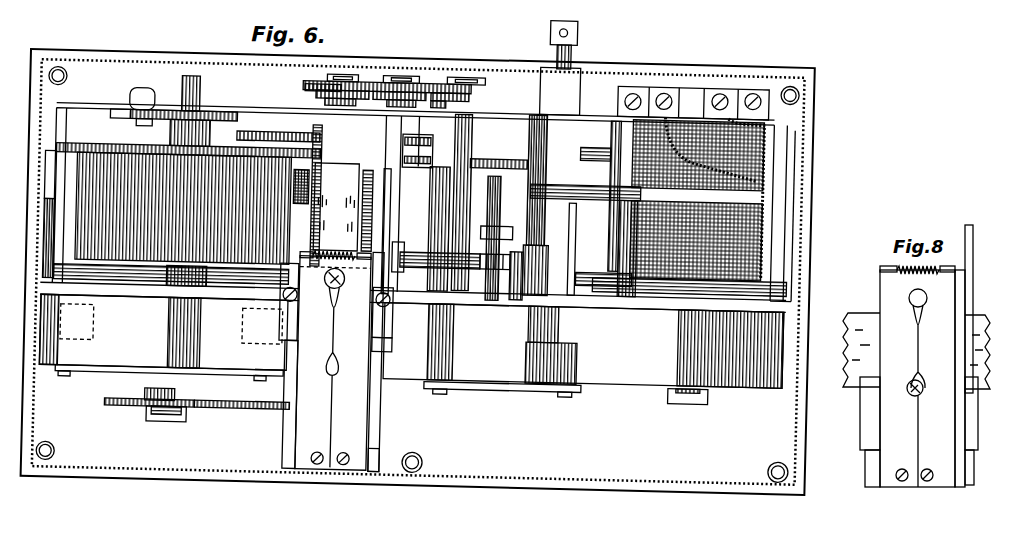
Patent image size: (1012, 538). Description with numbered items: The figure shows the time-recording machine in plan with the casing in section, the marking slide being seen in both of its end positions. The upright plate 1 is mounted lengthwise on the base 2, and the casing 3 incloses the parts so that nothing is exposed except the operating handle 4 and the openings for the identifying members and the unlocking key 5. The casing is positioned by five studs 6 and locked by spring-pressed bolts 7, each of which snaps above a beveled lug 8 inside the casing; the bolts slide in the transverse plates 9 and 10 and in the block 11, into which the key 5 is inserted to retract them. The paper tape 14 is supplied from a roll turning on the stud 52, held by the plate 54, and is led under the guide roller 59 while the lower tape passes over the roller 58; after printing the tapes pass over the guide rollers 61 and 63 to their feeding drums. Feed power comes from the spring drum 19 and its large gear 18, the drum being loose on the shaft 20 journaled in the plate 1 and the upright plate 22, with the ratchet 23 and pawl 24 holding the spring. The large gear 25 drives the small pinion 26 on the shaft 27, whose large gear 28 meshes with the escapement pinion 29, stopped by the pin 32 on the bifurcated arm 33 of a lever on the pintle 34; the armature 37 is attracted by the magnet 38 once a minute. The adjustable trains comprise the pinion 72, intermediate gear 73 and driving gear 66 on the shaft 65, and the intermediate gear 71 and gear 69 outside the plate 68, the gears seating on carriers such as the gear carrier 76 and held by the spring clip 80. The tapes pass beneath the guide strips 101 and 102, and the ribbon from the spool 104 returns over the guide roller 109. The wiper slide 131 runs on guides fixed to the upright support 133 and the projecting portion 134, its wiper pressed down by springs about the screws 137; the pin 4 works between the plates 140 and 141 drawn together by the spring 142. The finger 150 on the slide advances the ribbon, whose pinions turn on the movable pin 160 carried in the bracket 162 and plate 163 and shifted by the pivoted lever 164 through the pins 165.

In FIG. 6, the upright plate 1 is at (162, 287).
In FIG. 6, the base 2 is at (662, 455).
In FIG. 6, the casing 3 is at (185, 57).
In FIG. 6, the operating handle 4 is at (339, 277).
In FIG. 8, the operating handle 4 is at (910, 394).
In FIG. 6, the unlocking key 5 is at (576, 45).
In FIG. 6, the studs 6 is at (59, 66).
In FIG. 6, the spring-pressed bolts 7 is at (146, 262).
In FIG. 6, the beveled lug 8 is at (49, 222).
In FIG. 6, the transverse plate 9 is at (53, 178).
In FIG. 6, the transverse plate 10 is at (782, 187).
In FIG. 6, the block 11 is at (594, 220).
In FIG. 6, the paper tape 14 is at (649, 363).
In FIG. 8, the paper tape 14 is at (850, 377).
In FIG. 6, the large gear 18 is at (95, 151).
In FIG. 6, the spring drum 19 is at (150, 157).
In FIG. 6, the drum shaft 20 is at (201, 96).
In FIG. 6, the upright plate 22 is at (238, 105).
In FIG. 6, the ratchet 23 is at (173, 104).
In FIG. 6, the pawl 24 is at (120, 106).
In FIG. 6, the large gear 25 is at (279, 128).
In FIG. 6, the small pinion 26 is at (447, 133).
In FIG. 6, the shaft 27 is at (437, 209).
In FIG. 6, the large gear 28 is at (477, 152).
In FIG. 6, the escapement pinion 29 is at (535, 119).
In FIG. 6, the pin 32 is at (544, 200).
In FIG. 6, the bifurcated arm 33 is at (601, 176).
In FIG. 6, the pintle 34 is at (620, 254).
In FIG. 6, the armature 37 is at (620, 209).
In FIG. 6, the magnet 38 is at (745, 135).
In FIG. 6, the stud 52 is at (685, 386).
In FIG. 6, the plate 54 is at (700, 386).
In FIG. 6, the roller 58 is at (336, 213).
In FIG. 6, the guide roller 59 is at (557, 360).
In FIG. 6, the guide roller 61 is at (249, 320).
In FIG. 6, the guide roller 63 is at (100, 318).
In FIG. 6, the shaft 65 is at (469, 189).
In FIG. 6, the driving gear 66 is at (491, 83).
In FIG. 6, the plate 68 is at (103, 377).
In FIG. 6, the driving gear 69 is at (139, 405).
In FIG. 6, the intermediate gear 71 is at (277, 401).
In FIG. 6, the pinion 72 is at (306, 78).
In FIG. 6, the intermediate gear 73 is at (392, 74).
In FIG. 6, the gear carrier 76 is at (154, 391).
In FIG. 6, the spring clip 80 is at (179, 413).
In FIG. 6, the guide strip 101 is at (302, 398).
In FIG. 6, the guide strip 102 is at (388, 392).
In FIG. 6, the ribbon spool 104 is at (315, 122).
In FIG. 6, the guide roller 109 is at (336, 207).
In FIG. 6, the slide 131 is at (395, 332).
In FIG. 8, the slide 131 is at (862, 437).
In FIG. 6, the upright support 133 is at (388, 447).
In FIG. 8, the upright support 133 is at (870, 475).
In FIG. 6, the upwardly projecting portion 134 is at (398, 243).
In FIG. 6, the screws 137 is at (290, 291).
In FIG. 6, the plate 140 is at (333, 363).
In FIG. 8, the plate 140 is at (880, 298).
In FIG. 6, the plate 141 is at (345, 377).
In FIG. 8, the plate 141 is at (928, 388).
In FIG. 6, the spring 142 is at (343, 248).
In FIG. 8, the spring 142 is at (905, 268).
In FIG. 6, the finger 150 is at (389, 187).
In FIG. 8, the finger 150 is at (965, 235).
In FIG. 6, the axially movable pin 160 is at (436, 253).
In FIG. 6, the bracket 162 is at (518, 276).
In FIG. 6, the plate 163 is at (396, 201).
In FIG. 6, the pivoted lever 164 is at (498, 261).
In FIG. 6, the pins 165 is at (500, 189).